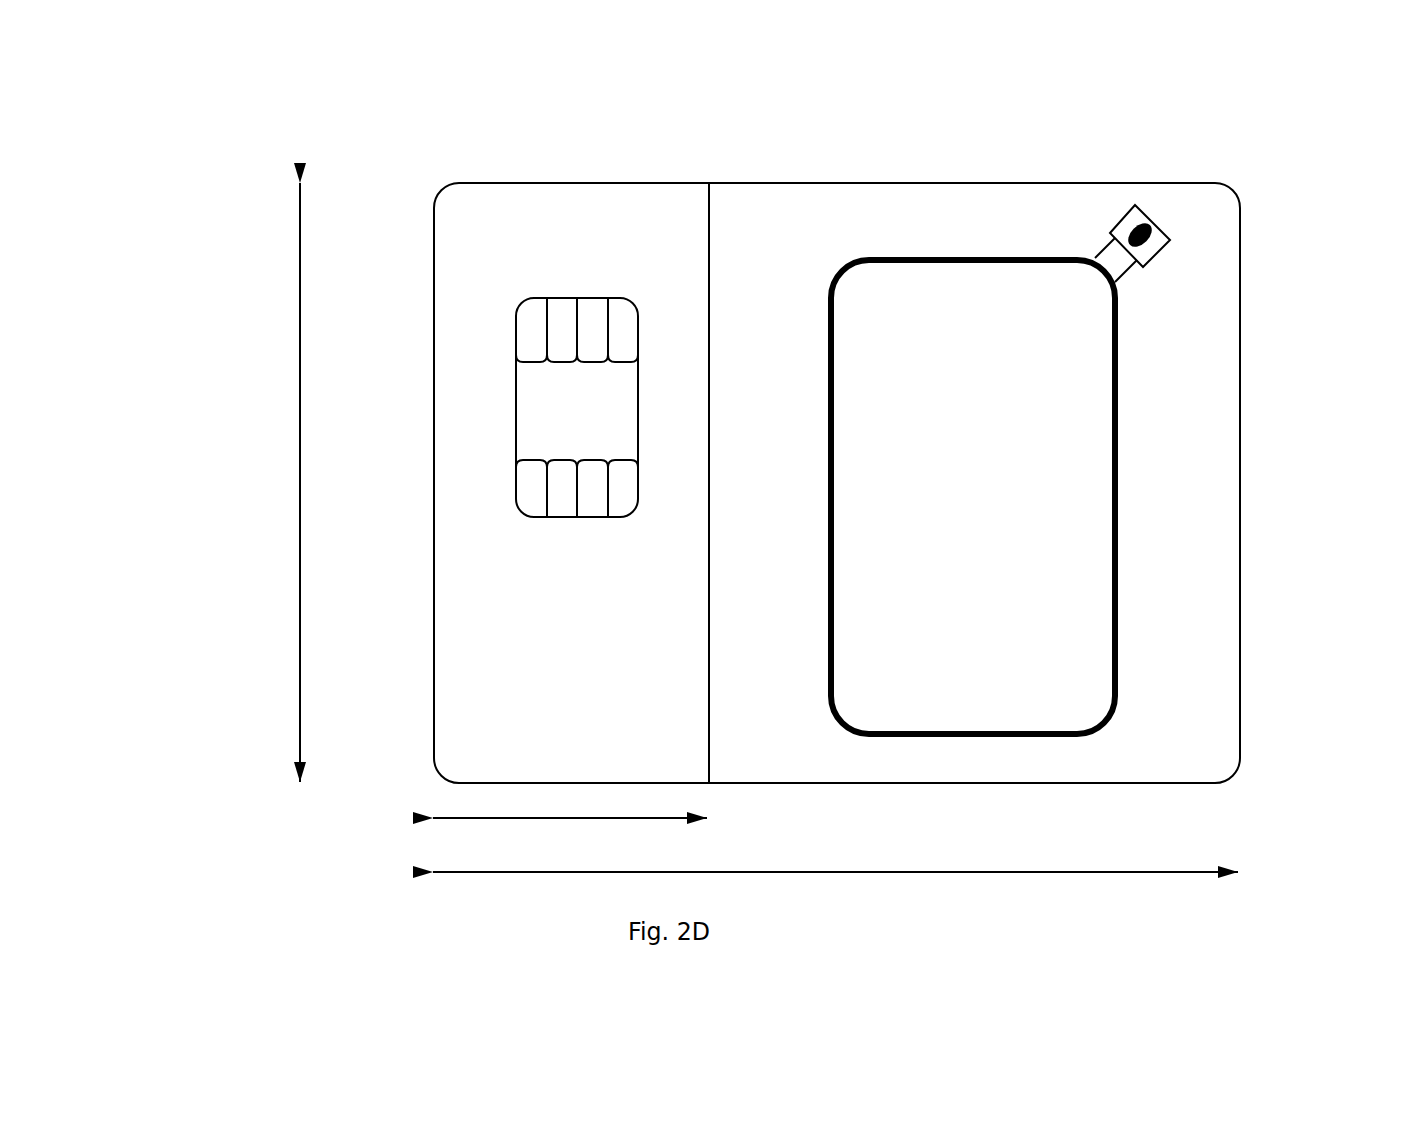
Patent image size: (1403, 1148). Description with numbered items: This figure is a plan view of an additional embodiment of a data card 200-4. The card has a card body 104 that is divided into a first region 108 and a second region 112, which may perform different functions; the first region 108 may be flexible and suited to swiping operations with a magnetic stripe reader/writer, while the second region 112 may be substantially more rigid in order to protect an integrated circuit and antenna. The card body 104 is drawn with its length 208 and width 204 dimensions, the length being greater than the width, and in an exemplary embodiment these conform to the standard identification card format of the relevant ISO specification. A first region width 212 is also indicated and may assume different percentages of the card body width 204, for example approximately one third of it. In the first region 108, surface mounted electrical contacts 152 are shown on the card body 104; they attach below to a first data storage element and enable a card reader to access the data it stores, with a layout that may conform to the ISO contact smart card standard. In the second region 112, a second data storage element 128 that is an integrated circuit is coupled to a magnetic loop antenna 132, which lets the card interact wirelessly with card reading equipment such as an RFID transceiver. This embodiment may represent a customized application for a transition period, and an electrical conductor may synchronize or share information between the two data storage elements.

The card body 104 is at (1237, 773).
The first region 108 is at (497, 233).
The second region 112 is at (1187, 280).
The second data storage element 128 is at (1145, 222).
The magnetic loop antenna 132 is at (1025, 258).
The electrical contacts 152 is at (540, 335).
The data card 200-4 is at (762, 135).
The width 204 is at (810, 872).
The length 208 is at (300, 450).
The first region width 212 is at (495, 818).